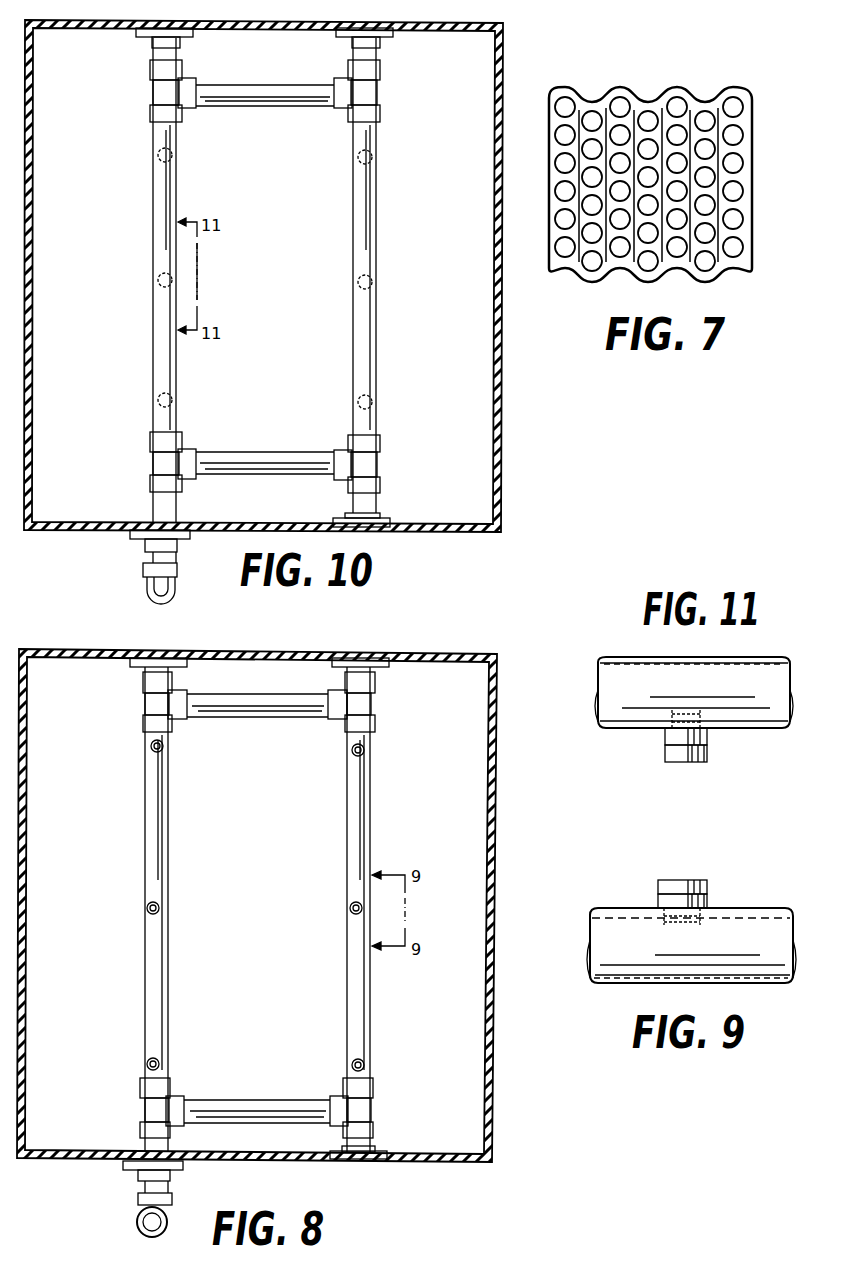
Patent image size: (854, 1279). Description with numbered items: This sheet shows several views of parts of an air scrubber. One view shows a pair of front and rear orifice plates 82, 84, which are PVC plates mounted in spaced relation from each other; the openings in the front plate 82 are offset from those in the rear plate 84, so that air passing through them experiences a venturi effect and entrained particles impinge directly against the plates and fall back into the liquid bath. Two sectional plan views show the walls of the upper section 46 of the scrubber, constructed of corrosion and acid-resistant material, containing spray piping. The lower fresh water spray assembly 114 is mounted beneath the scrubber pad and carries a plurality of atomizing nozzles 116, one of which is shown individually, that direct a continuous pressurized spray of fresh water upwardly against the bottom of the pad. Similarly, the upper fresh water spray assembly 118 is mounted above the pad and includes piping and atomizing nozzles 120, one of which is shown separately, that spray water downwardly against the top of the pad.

In FIG. 10, the upper section 46 is at (502, 398).
In FIG. 8, the upper section 46 is at (496, 813).
In FIG. 7, the front orifice plate 82 is at (745, 135).
In FIG. 7, the rear orifice plate 84 is at (750, 172).
In FIG. 8, the lower fresh water spray assembly 114 is at (133, 1018).
In FIG. 9, the atomizing nozzle 116 is at (708, 888).
In FIG. 8, the atomizing nozzle 116 is at (164, 748).
In FIG. 10, the upper fresh water spray assembly 118 is at (135, 419).
In FIG. 10, the atomizing nozzle 120 is at (168, 400).
In FIG. 11, the atomizing nozzle 120 is at (668, 753).